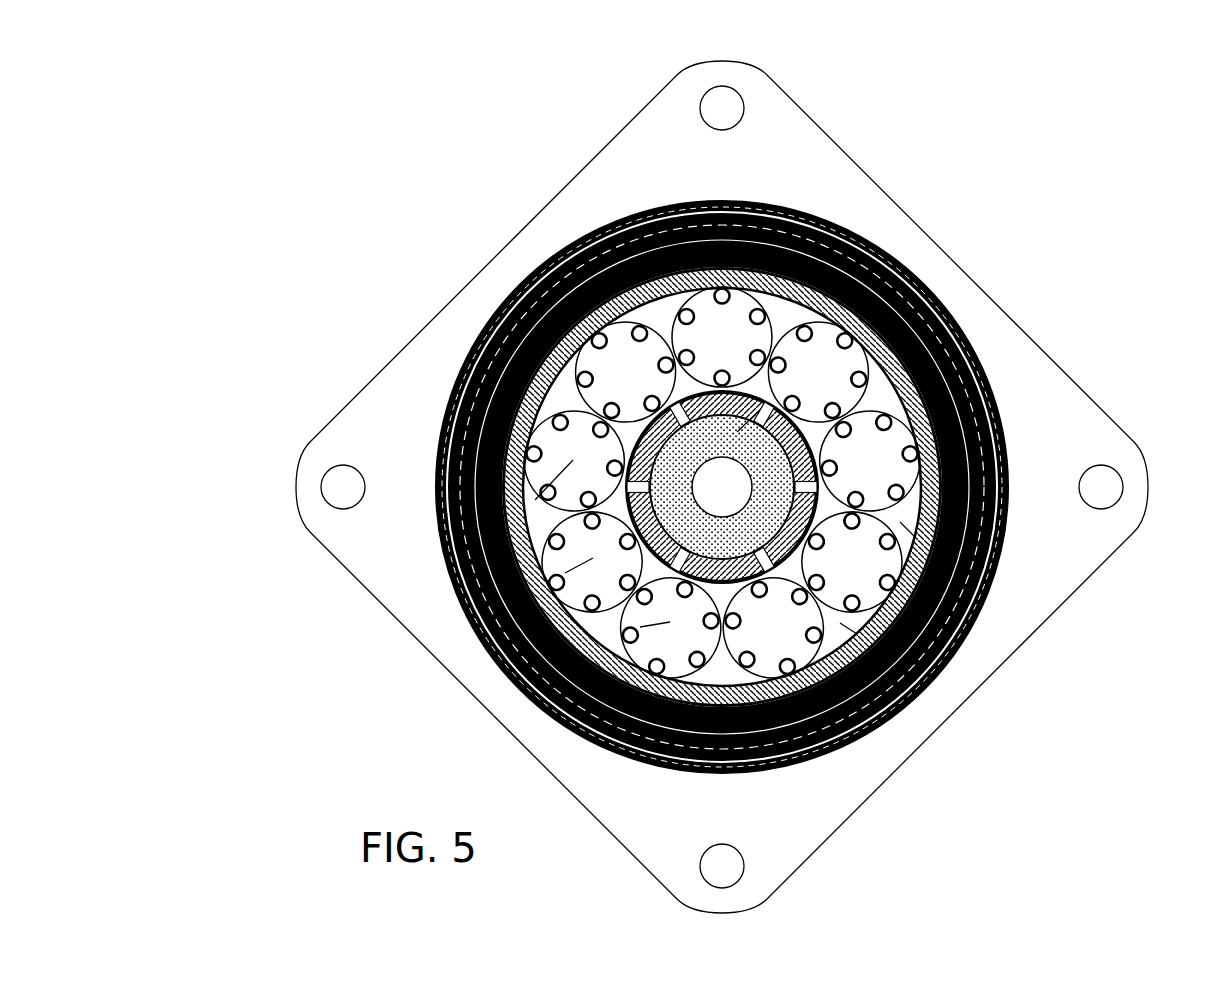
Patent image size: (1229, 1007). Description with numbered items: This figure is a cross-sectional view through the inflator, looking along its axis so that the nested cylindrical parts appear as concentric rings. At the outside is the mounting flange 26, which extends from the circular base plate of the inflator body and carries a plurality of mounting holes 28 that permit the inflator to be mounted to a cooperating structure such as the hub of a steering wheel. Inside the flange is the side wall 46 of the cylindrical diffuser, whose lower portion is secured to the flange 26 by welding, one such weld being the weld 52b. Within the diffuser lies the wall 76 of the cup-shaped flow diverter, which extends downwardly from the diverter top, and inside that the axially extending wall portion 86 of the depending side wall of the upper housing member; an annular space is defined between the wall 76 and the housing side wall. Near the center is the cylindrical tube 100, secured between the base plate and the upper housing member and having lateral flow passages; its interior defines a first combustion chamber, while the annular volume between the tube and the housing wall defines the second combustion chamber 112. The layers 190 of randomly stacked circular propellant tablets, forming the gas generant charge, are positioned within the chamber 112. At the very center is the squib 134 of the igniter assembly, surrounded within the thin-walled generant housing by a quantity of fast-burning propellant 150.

The mounting flange 26 is at (372, 535).
The mounting holes 28 is at (319, 484).
The side wall 46 is at (507, 302).
The weld 52b is at (470, 352).
The wall 76 is at (933, 293).
The axially extending wall portion 86 is at (640, 222).
The cylindrical tube 100 is at (997, 393).
The second combustion chamber 112 is at (898, 710).
The squib 134 is at (720, 486).
The fast-burning propellant 150 is at (848, 237).
The layers 190 is at (497, 663).